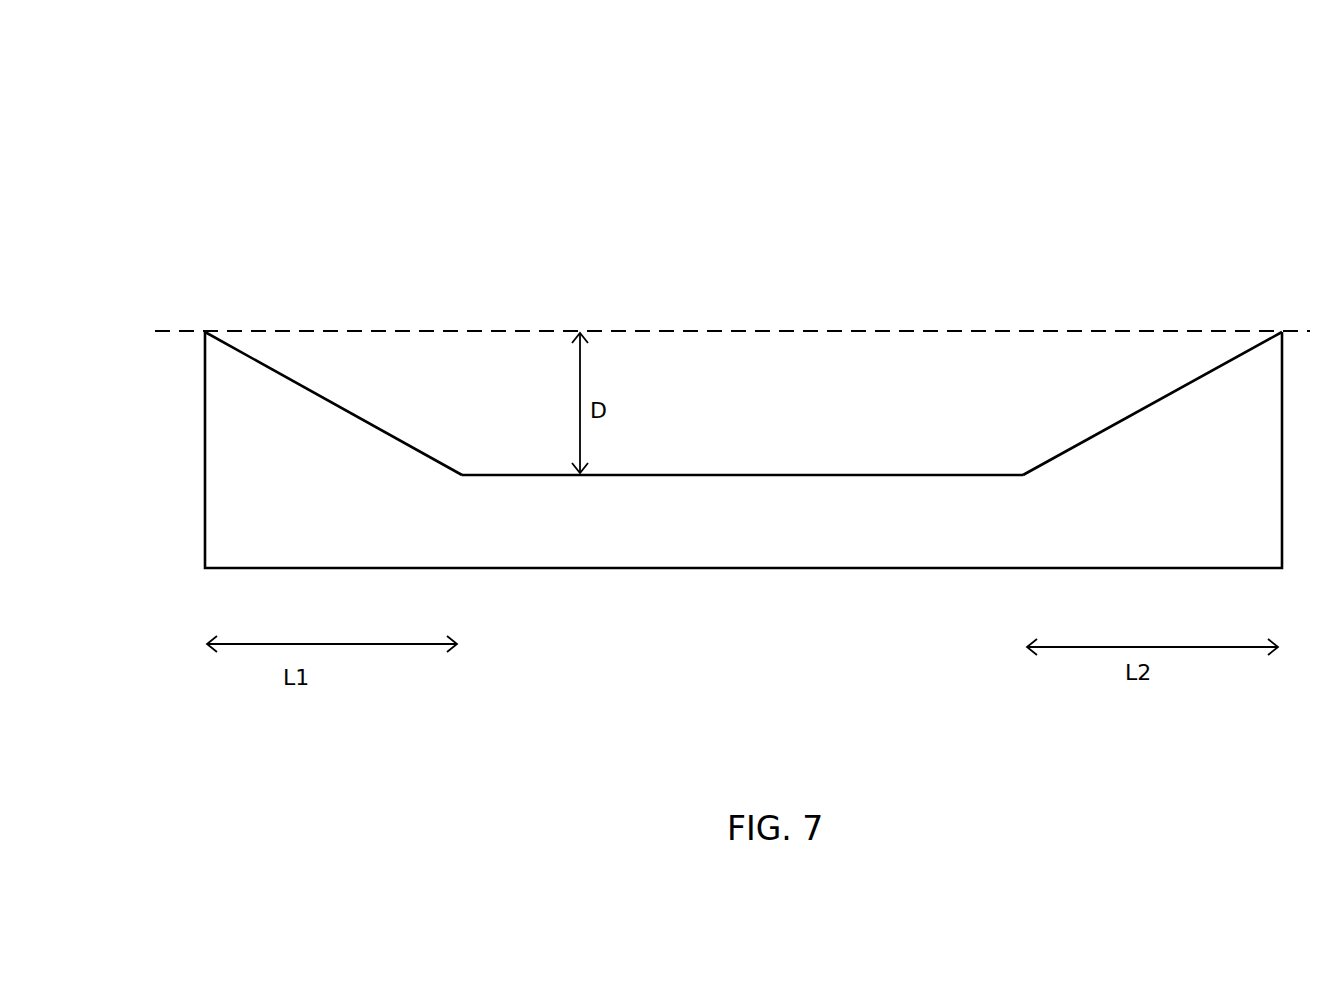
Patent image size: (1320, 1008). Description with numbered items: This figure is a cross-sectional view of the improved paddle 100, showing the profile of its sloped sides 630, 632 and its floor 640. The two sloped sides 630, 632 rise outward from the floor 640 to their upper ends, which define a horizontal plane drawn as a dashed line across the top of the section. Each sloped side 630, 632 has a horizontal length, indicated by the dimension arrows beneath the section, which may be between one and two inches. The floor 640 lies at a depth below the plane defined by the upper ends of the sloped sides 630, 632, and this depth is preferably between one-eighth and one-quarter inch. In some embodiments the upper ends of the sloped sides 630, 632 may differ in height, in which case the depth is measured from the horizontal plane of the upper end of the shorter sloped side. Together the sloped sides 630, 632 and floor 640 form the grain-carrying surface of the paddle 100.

The paddle 100 is at (743, 318).
The sloped side 630 is at (303, 385).
The sloped side 632 is at (1188, 383).
The floor 640 is at (833, 475).